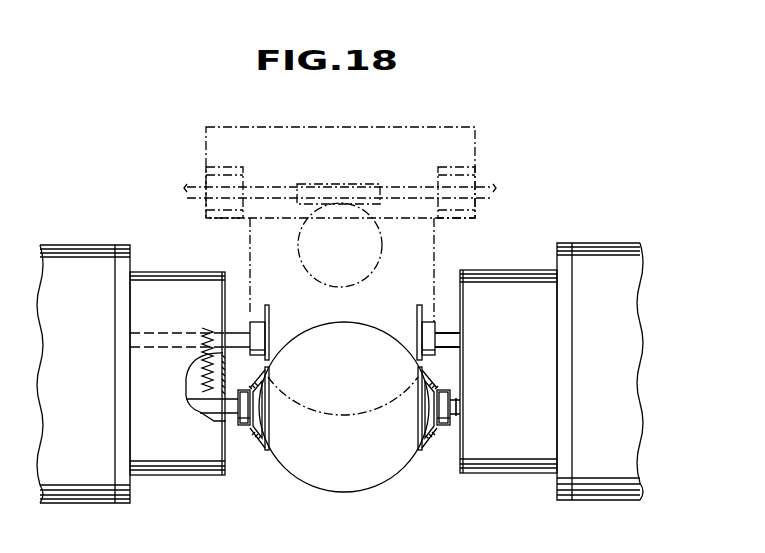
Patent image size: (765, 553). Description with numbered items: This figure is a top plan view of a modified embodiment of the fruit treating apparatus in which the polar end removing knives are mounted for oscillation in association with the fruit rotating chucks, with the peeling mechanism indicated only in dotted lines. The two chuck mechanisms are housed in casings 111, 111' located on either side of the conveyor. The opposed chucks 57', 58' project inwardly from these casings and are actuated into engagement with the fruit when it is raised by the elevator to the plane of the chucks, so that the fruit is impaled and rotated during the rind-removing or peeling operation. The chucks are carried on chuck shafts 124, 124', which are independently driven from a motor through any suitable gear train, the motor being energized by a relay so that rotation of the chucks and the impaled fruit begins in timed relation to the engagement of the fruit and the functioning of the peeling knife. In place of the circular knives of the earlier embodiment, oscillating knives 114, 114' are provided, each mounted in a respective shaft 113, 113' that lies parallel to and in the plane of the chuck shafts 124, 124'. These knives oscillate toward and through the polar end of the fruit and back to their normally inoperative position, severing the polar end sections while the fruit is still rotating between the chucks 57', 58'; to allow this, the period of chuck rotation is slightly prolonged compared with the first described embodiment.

The casing 111 is at (131, 381).
The casing 111' is at (551, 379).
The shaft 113 is at (199, 332).
The shaft 113' is at (471, 301).
The chuck shaft 124 is at (209, 423).
The chuck shaft 124' is at (465, 451).
The chuck 57' is at (250, 439).
The chuck 58' is at (439, 435).
The oscillating knife 114 is at (274, 441).
The oscillating knife 114' is at (415, 441).